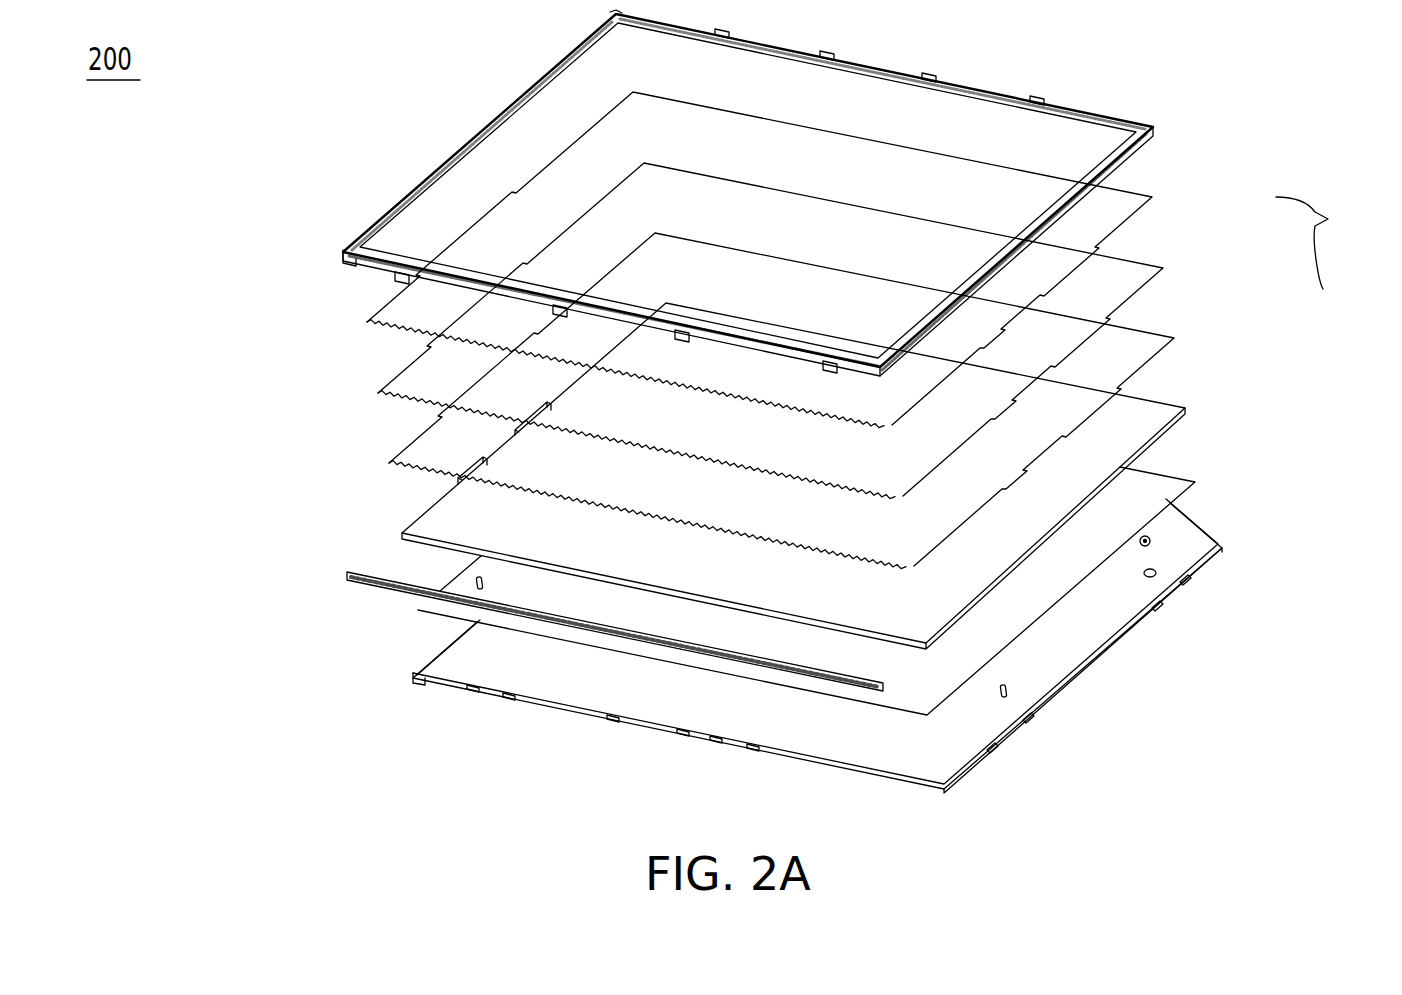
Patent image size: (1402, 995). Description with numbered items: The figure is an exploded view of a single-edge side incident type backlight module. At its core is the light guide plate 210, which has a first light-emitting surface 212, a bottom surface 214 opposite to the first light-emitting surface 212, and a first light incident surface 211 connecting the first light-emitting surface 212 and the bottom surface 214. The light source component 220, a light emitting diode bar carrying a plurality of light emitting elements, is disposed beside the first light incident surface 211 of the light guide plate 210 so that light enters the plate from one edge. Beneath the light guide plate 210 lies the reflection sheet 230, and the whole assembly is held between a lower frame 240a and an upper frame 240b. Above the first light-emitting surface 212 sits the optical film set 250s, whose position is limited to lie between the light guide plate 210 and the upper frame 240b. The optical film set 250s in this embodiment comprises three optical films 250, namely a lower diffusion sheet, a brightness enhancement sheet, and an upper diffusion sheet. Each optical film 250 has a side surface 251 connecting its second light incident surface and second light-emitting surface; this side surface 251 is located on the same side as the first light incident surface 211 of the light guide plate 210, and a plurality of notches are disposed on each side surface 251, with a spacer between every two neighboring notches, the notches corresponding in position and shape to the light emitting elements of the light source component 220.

The light guide plate 210 is at (1188, 409).
The first light incident surface 211 is at (443, 562).
The first light-emitting surface 212 is at (1138, 414).
The bottom surface 214 is at (1157, 464).
The light source component 220 is at (347, 575).
The reflection sheet 230 is at (420, 609).
The lower frame 240a is at (593, 720).
The upper frame 240b is at (1148, 143).
The optical film 250 is at (1100, 242).
The optical film set 250s is at (1332, 238).
The side surface 251 is at (394, 357).